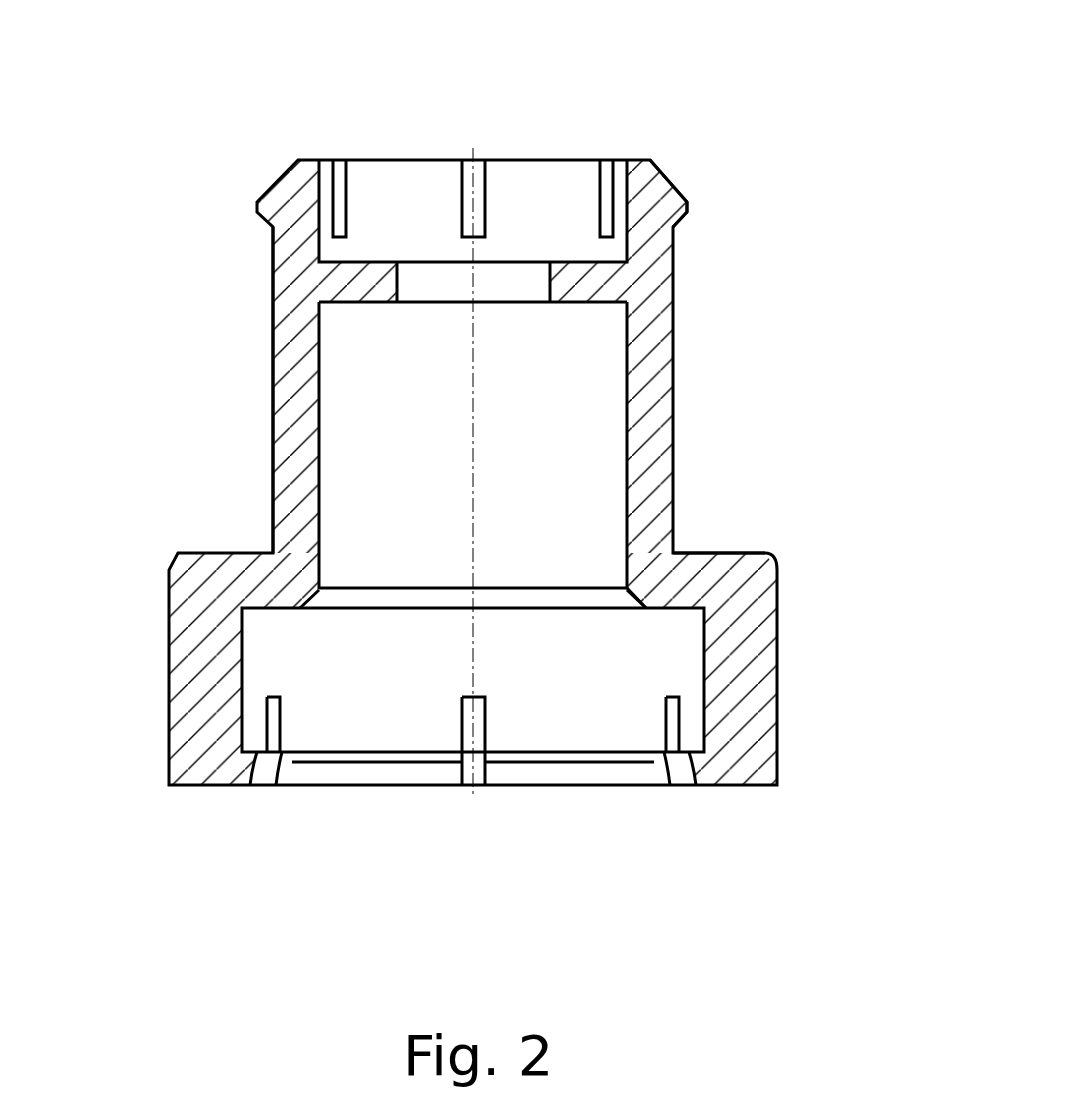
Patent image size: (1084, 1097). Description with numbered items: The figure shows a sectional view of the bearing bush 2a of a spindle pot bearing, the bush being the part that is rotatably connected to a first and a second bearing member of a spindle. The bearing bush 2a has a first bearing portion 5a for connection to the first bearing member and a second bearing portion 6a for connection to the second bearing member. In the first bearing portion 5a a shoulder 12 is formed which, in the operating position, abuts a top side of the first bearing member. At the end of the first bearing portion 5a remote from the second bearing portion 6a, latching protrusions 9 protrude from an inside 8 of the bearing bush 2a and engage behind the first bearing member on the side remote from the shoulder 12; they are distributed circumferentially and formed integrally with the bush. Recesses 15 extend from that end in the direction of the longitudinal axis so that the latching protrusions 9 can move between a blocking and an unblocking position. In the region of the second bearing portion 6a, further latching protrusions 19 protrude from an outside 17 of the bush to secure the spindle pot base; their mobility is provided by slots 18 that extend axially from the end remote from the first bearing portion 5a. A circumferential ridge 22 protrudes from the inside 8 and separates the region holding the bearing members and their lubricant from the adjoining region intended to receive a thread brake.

The bearing bush 2a is at (821, 99).
The first bearing portion 5a is at (819, 618).
The second bearing portion 6a is at (225, 374).
The inside 8 is at (679, 667).
The latching protrusions 9 is at (537, 758).
The shoulder 12 is at (668, 580).
The recesses 15 is at (673, 732).
The outside 17 is at (275, 423).
The slots 18 is at (607, 177).
The latching protrusions 19 is at (687, 197).
The circumferential ridge 22 is at (410, 278).